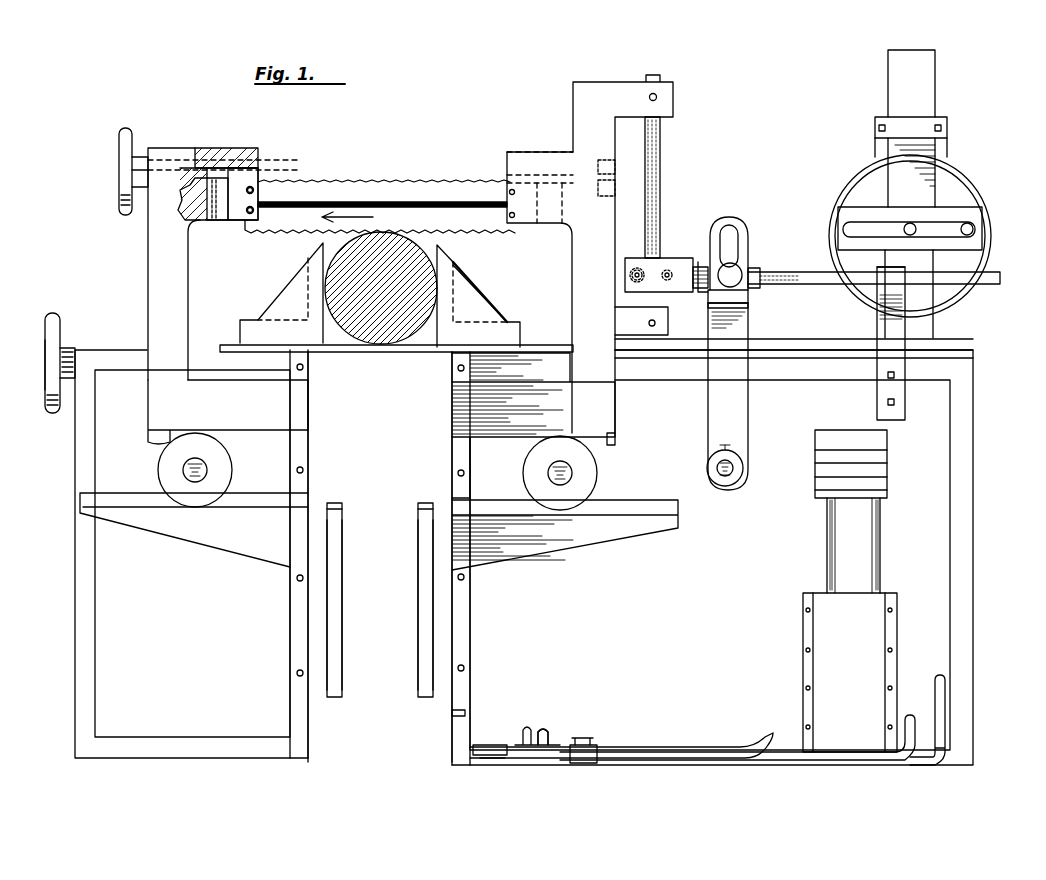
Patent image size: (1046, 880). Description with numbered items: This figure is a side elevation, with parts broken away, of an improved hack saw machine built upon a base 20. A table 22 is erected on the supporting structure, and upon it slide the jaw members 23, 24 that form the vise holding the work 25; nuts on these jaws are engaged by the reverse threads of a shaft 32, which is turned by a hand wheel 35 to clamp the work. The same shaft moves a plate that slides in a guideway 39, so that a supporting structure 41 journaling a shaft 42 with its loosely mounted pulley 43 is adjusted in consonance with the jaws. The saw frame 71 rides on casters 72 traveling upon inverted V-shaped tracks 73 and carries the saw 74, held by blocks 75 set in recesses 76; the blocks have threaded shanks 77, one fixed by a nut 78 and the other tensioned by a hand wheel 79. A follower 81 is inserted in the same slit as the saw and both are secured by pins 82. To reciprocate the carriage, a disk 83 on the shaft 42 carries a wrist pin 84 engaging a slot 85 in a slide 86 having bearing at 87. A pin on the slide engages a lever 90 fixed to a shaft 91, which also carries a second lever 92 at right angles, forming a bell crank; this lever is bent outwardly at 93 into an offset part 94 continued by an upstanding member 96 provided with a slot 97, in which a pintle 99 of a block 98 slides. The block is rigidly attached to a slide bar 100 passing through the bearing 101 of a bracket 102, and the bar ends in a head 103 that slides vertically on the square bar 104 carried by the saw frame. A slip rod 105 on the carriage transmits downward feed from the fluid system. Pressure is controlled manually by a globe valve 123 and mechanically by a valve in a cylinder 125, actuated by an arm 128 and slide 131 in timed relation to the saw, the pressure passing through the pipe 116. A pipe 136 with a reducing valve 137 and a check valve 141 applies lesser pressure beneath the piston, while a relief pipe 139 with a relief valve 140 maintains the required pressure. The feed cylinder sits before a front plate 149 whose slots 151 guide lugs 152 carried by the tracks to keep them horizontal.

The base 20 is at (705, 768).
The table 22 is at (537, 352).
The jaw member 23 is at (290, 293).
The jaw member 24 is at (465, 298).
The work 25 is at (372, 245).
The shaft 32 is at (75, 350).
The hand wheel 35 is at (45, 370).
The guideway 39 is at (805, 343).
The supporting structure 41 is at (940, 320).
The shaft 42 is at (915, 225).
The pulley 43 is at (848, 180).
The saw frame 71 is at (174, 310).
The casters 72 is at (220, 470).
The tracks 73 is at (240, 503).
The saw 74 is at (415, 212).
The blocks 75 is at (258, 178).
The recesses 76 is at (220, 222).
The shanks 77 is at (212, 160).
The nut 78 is at (600, 182).
The hand wheel 79 is at (119, 190).
The follower 81 is at (348, 182).
The pins 82 is at (254, 208).
The disk 83 is at (858, 191).
The wrist pin 84 is at (973, 229).
The slot 85 is at (850, 229).
The slide 86 is at (920, 175).
The bearing 87 is at (885, 118).
The lever 90 is at (887, 473).
The shaft 91 is at (722, 487).
The lever 92 is at (708, 413).
The bend 93 is at (748, 315).
The offset part 94 is at (748, 297).
The upstanding member 96 is at (745, 222).
The slot 97 is at (738, 243).
The block 98 is at (700, 262).
The pintle 99 is at (723, 280).
The slide bar 100 is at (838, 286).
The bearing 101 is at (900, 277).
The bracket 102 is at (895, 398).
The head 103 is at (665, 262).
The bar 104 is at (662, 167).
The slip rod 105 is at (650, 258).
The pipe 116 is at (678, 745).
The globe valve 123 is at (585, 757).
The cylinder 125 is at (828, 632).
The arm 128 is at (880, 530).
The slide 131 is at (845, 545).
The pipe 136 is at (800, 762).
The reducing valve 137 is at (548, 733).
The relief pipe 139 is at (928, 762).
The relief valve 140 is at (533, 728).
The check valve 141 is at (490, 745).
The front plate 149 is at (382, 742).
The slots 151 is at (327, 623).
The lugs 152 is at (327, 530).